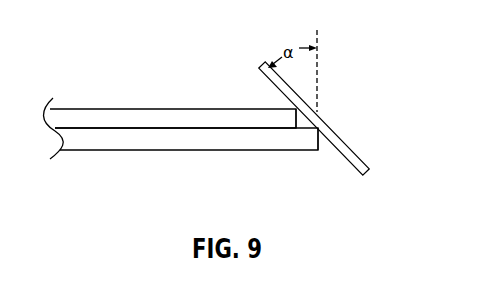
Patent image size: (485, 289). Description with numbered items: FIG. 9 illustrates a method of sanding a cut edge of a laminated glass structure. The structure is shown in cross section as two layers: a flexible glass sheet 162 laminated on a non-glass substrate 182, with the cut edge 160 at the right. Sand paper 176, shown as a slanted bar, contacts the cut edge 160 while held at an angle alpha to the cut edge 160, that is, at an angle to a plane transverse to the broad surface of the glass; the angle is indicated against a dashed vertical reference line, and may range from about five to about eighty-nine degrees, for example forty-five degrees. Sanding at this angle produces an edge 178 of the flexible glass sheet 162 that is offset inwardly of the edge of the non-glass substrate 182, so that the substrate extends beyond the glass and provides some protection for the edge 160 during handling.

The cut edge 160 is at (272, 146).
The flexible glass sheet 162 is at (135, 118).
The sand paper 176 is at (352, 150).
The edge of the flexible glass sheet 178 is at (288, 120).
The non-glass substrate 182 is at (323, 134).